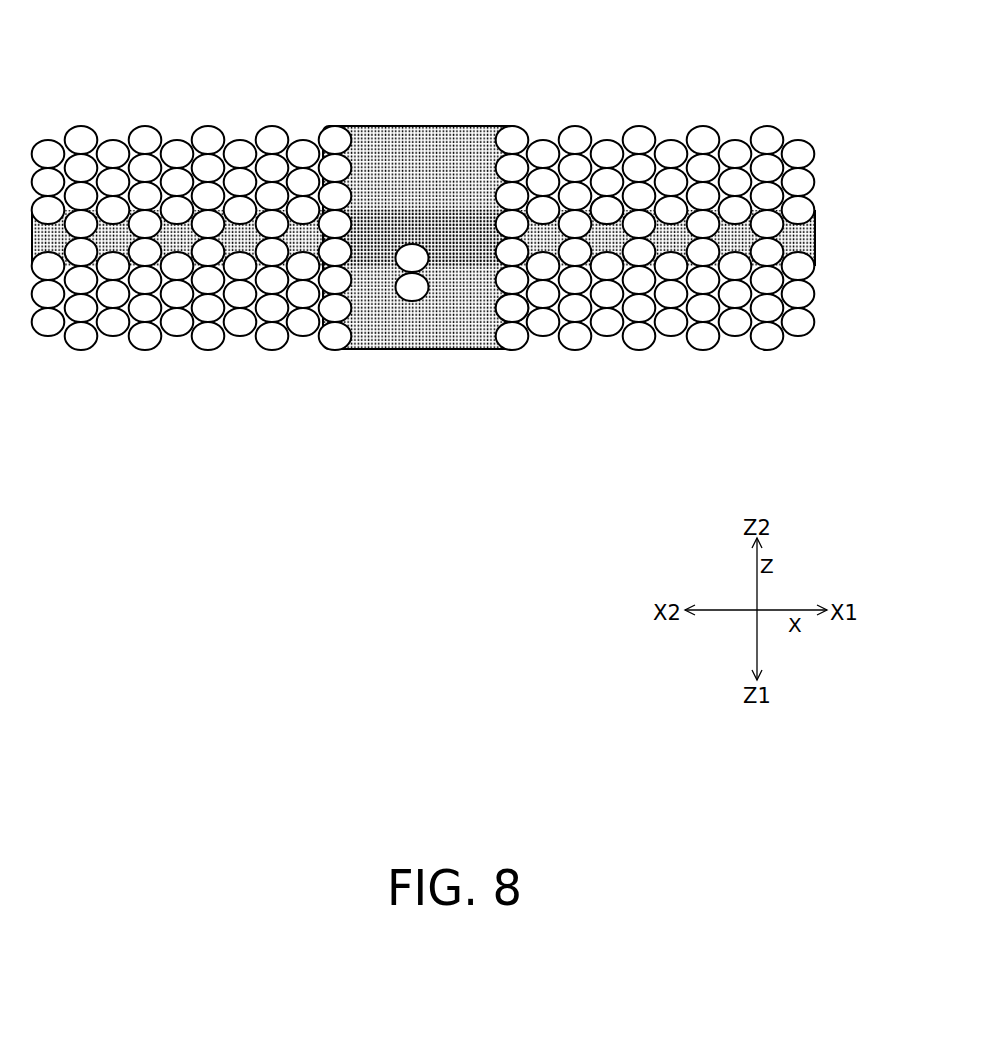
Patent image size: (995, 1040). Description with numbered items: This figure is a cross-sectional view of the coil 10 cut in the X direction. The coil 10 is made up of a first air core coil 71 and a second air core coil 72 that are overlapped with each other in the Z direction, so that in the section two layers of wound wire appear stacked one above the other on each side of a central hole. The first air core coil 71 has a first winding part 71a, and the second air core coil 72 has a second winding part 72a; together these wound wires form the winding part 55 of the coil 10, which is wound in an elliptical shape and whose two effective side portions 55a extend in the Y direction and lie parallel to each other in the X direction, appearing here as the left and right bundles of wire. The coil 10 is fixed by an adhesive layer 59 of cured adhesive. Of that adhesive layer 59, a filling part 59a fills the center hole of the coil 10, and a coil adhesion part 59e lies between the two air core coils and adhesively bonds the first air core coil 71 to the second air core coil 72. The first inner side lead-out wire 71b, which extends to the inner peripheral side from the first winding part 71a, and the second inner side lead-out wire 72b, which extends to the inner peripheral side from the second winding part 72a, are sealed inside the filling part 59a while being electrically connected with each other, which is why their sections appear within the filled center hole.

The coil 10 is at (463, 233).
The winding part 55 is at (569, 329).
The effective side portion 55a is at (463, 201).
The adhesive layer 59 is at (419, 155).
The filling part 59a is at (459, 173).
The coil adhesion part 59e is at (664, 237).
The first air core coil 71 is at (817, 272).
The first winding part 71a is at (517, 312).
The first inner side lead-out wire 71b is at (400, 300).
The second air core coil 72 is at (817, 167).
The second winding part 72a is at (607, 212).
The second inner side lead-out wire 72b is at (353, 215).